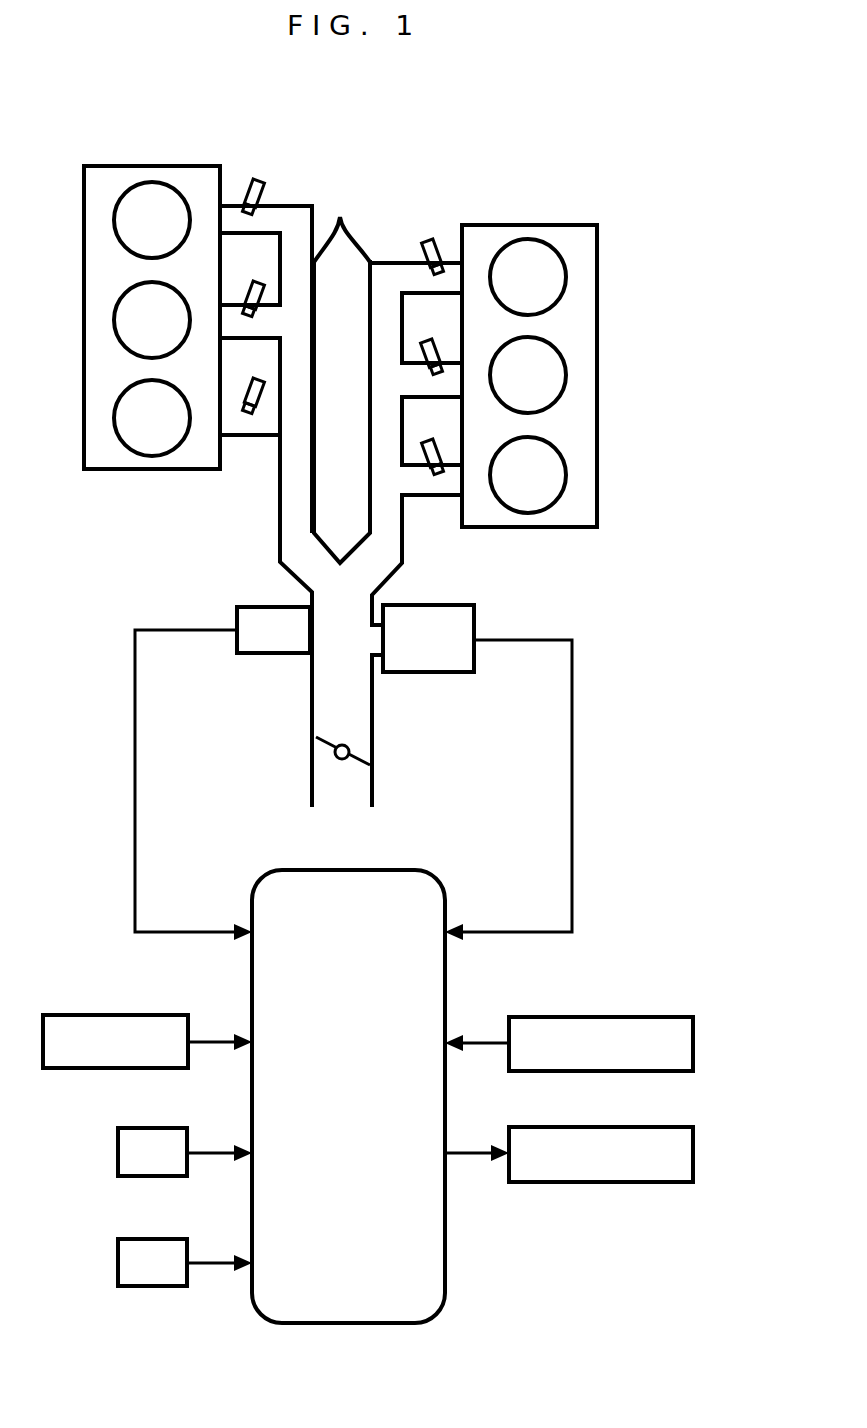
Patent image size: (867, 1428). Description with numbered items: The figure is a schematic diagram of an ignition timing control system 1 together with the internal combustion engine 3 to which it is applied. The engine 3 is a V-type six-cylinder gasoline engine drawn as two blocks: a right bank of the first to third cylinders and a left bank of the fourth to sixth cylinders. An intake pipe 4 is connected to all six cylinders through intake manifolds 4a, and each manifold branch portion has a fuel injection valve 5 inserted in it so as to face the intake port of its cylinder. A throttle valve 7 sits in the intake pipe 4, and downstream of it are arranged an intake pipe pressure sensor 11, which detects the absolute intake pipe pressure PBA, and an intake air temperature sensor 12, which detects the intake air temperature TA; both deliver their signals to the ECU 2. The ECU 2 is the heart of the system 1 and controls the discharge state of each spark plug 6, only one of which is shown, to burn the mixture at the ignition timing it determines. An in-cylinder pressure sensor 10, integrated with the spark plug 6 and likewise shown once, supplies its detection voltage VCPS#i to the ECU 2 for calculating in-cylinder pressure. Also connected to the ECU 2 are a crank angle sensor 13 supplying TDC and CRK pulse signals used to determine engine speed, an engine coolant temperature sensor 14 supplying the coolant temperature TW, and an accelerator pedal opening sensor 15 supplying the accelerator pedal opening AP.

The ignition timing control system 1 is at (690, 860).
The ECU 2 is at (445, 1262).
The internal combustion engine 3 is at (553, 225).
The intake pipe 4 is at (310, 786).
The intake manifold 4a is at (342, 374).
The fuel injection valve 5 is at (259, 182).
The spark plug 6 is at (664, 1127).
The throttle valve 7 is at (346, 745).
The in-cylinder pressure sensor 10 is at (664, 1017).
The intake pipe pressure sensor 11 is at (460, 605).
The intake air temperature sensor 12 is at (248, 607).
The crank angle sensor 13 is at (112, 1015).
The engine coolant temperature sensor 14 is at (118, 1150).
The accelerator pedal opening sensor 15 is at (118, 1258).